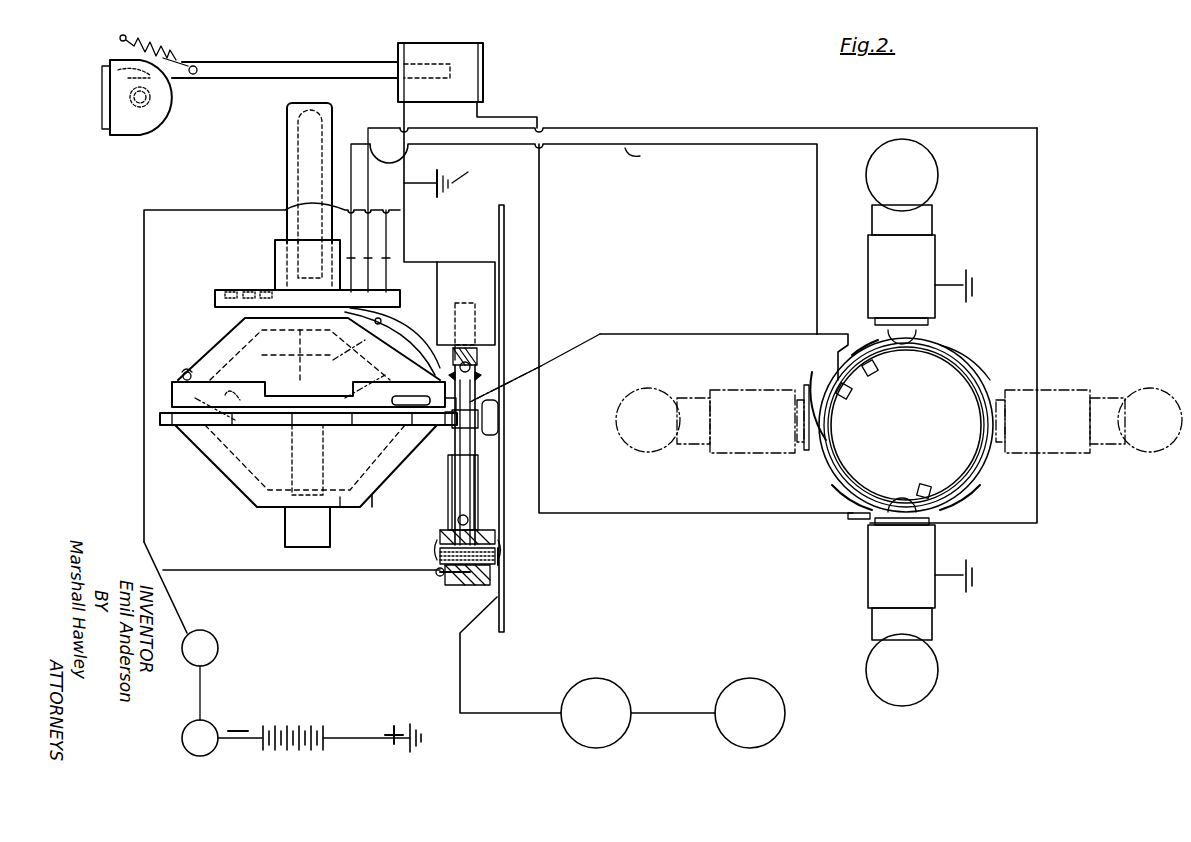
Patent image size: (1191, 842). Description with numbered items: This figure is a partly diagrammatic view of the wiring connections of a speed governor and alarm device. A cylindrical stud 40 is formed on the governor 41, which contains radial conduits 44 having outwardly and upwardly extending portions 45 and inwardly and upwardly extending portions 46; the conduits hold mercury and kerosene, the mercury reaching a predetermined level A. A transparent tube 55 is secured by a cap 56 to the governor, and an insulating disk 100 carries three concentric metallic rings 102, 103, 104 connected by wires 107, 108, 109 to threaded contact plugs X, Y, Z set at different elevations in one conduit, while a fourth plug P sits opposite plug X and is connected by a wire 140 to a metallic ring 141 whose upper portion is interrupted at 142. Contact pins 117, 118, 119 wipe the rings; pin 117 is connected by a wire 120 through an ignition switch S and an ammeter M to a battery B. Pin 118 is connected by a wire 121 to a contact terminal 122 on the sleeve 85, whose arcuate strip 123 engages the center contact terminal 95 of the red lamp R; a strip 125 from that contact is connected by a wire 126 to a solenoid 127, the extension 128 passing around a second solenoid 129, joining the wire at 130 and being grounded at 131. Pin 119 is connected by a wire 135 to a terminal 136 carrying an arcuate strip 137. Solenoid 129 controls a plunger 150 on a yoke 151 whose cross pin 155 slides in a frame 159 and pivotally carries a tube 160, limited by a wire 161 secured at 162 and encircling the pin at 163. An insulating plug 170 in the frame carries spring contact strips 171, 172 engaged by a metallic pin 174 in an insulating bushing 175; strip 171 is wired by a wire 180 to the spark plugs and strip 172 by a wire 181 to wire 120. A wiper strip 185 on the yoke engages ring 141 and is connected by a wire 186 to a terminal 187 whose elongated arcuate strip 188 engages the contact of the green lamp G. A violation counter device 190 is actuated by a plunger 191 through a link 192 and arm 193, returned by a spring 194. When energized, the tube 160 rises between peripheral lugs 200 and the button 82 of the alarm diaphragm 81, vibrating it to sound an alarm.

The cylindrical stud 40 is at (285, 523).
The governor 41 is at (374, 480).
The conduits 44 is at (341, 498).
The outwardly and upwardly extending portions 45 is at (240, 470).
The inwardly and upwardly extending portions 46 is at (248, 370).
The tube 55 is at (287, 132).
The cap 56 is at (275, 245).
The alarm diaphragm 81 is at (505, 614).
The button 82 is at (500, 405).
The sleeve or casing 85 is at (953, 370).
The center contact terminal 95 is at (920, 332).
The disk 100 is at (215, 298).
The metallic ring 102 is at (228, 290).
The metallic ring 103 is at (248, 291).
The metallic ring 104 is at (265, 291).
The wire 107 is at (440, 318).
The wire 108 is at (425, 305).
The wire 109 is at (420, 290).
The contact pin 117 is at (390, 262).
The contact pin 118 is at (372, 260).
The contact pin 119 is at (356, 257).
The wire 120 is at (211, 210).
The wire 121 is at (575, 128).
The contact terminal 122 is at (948, 500).
The arcuate metallic contact strip 123 is at (838, 483).
The strip 125 is at (853, 520).
The wire 126 is at (540, 185).
The solenoid 127 is at (438, 45).
The extension 128 is at (407, 170).
The second solenoid 129 is at (473, 262).
The connection 130 is at (545, 345).
The ground 131 is at (477, 168).
The wire 135 is at (648, 154).
The contact terminal 136 is at (834, 345).
The arcuate strip 137 is at (806, 390).
The wire 140 is at (178, 374).
The metallic ring 141 is at (172, 395).
The interruption 142 is at (268, 382).
The core or plunger 150 is at (470, 352).
The yoke 151 is at (478, 372).
The cross pin 155 is at (465, 520).
The supporting and guiding frame 159 is at (445, 590).
The tube 160 is at (480, 450).
The wire 161 is at (498, 415).
The upper securing point 162 is at (478, 355).
The lower encircling portion 163 is at (468, 515).
The insulating plug 170 is at (458, 590).
The spring contact strip 171 is at (500, 556).
The spring contact strip 172 is at (438, 555).
The metallic pin 174 is at (440, 533).
The insulating bushing or plug 175 is at (490, 535).
The wire 180 is at (500, 712).
The wire 181 is at (355, 572).
The wiper strip 185 is at (400, 405).
The wire 186 is at (685, 334).
The contact terminal 187 is at (862, 340).
The elongated arcuate strip 188 is at (975, 372).
The violation counter device 190 is at (110, 110).
The plunger 191 is at (336, 62).
The link 192 is at (189, 62).
The arm 193 is at (125, 88).
The spring 194 is at (160, 43).
The peripheral lugs 200 is at (168, 430).
The mercury level A is at (223, 403).
The battery B is at (297, 725).
The green lamp G is at (1024, 296).
The ammeter M is at (210, 725).
The contact plug P is at (186, 373).
The red lamp R is at (794, 547).
The ignition switch S is at (215, 645).
The contact plug X is at (365, 386).
The contact plug Y is at (355, 348).
The contact plug Z is at (378, 325).